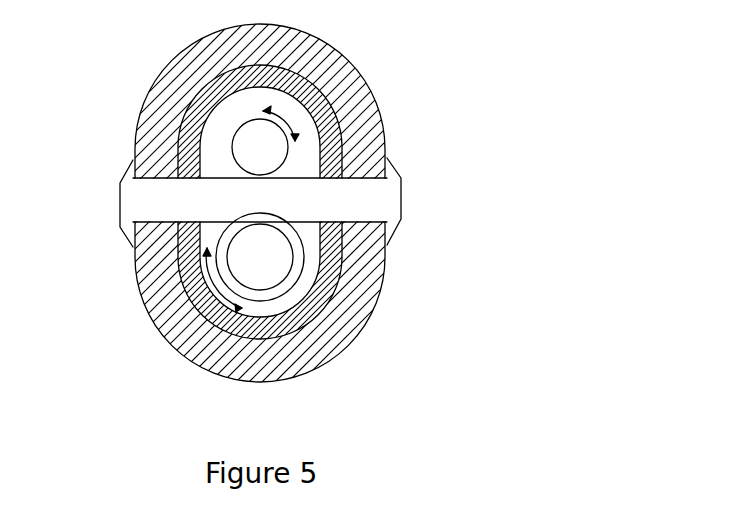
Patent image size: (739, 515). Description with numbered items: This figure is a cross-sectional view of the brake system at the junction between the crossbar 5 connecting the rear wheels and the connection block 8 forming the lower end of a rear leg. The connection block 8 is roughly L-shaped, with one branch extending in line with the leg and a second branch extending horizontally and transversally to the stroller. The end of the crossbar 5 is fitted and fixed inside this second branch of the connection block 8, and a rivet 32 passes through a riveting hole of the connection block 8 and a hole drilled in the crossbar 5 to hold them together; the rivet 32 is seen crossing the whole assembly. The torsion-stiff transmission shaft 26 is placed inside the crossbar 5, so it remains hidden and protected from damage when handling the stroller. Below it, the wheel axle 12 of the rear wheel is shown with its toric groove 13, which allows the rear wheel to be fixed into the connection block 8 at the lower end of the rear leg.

The crossbar 5 is at (178, 298).
The connection block 8 is at (383, 118).
The wheel axle 12 is at (292, 307).
The toric groove 13 is at (298, 262).
The shaft 26 is at (236, 128).
The rivet 32 is at (402, 212).